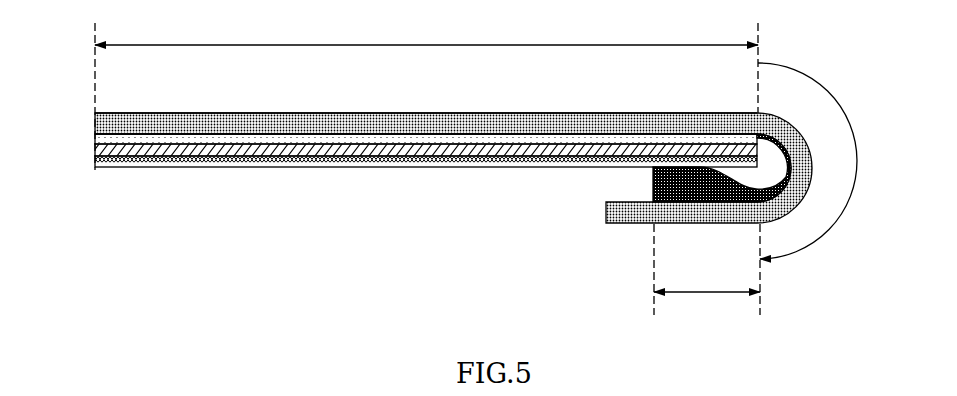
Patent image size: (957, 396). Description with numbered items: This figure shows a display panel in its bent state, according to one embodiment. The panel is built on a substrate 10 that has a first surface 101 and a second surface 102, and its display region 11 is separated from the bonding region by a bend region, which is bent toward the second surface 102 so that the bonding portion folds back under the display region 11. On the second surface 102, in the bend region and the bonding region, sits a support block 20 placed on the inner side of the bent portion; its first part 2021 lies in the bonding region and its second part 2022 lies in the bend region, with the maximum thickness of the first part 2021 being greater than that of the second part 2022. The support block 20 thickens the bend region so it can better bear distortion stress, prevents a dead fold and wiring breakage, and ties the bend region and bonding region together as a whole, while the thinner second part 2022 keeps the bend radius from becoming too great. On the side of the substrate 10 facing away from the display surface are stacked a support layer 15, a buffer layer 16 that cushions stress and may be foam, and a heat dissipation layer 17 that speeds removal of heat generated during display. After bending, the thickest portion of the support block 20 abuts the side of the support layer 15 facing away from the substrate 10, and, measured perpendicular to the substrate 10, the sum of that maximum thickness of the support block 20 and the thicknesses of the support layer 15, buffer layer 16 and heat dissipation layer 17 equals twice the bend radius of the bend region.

The substrate 10 is at (110, 122).
The first surface 101 is at (463, 113).
The second surface 102 is at (411, 131).
The display region 11 is at (426, 96).
The support layer 15 is at (103, 140).
The buffer layer 16 is at (103, 151).
The heat dissipation layer 17 is at (107, 163).
The support block 20 is at (653, 185).
The first part 2021 is at (707, 271).
The second part 2022 is at (820, 161).